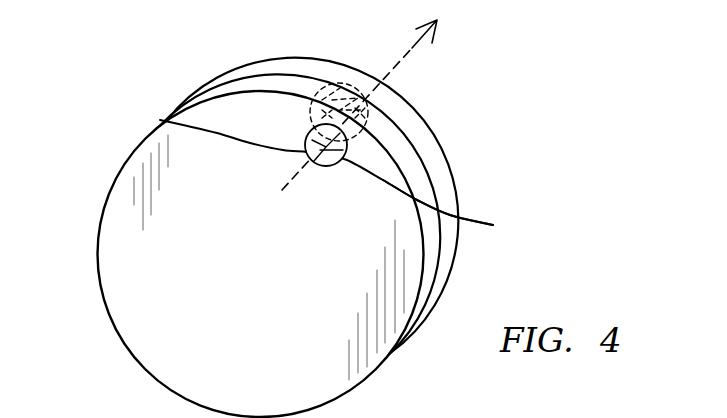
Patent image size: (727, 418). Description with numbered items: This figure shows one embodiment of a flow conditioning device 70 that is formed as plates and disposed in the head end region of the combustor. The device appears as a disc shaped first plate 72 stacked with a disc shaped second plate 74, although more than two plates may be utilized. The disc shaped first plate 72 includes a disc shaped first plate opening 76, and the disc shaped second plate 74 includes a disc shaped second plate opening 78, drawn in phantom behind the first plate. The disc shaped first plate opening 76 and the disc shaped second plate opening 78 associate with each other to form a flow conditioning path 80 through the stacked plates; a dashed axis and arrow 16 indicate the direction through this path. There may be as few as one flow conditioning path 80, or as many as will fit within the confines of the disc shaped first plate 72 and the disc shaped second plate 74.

The axis of rotation / direction of movement 16 is at (409, 54).
The flow conditioning device 70 is at (489, 124).
The disc shaped first plate 72 is at (102, 213).
The disc shaped second plate 74 is at (243, 66).
The disc shaped first plate opening 76 is at (478, 222).
The disc shaped second plate opening 78 is at (370, 104).
The flow conditioning path 80 is at (160, 120).